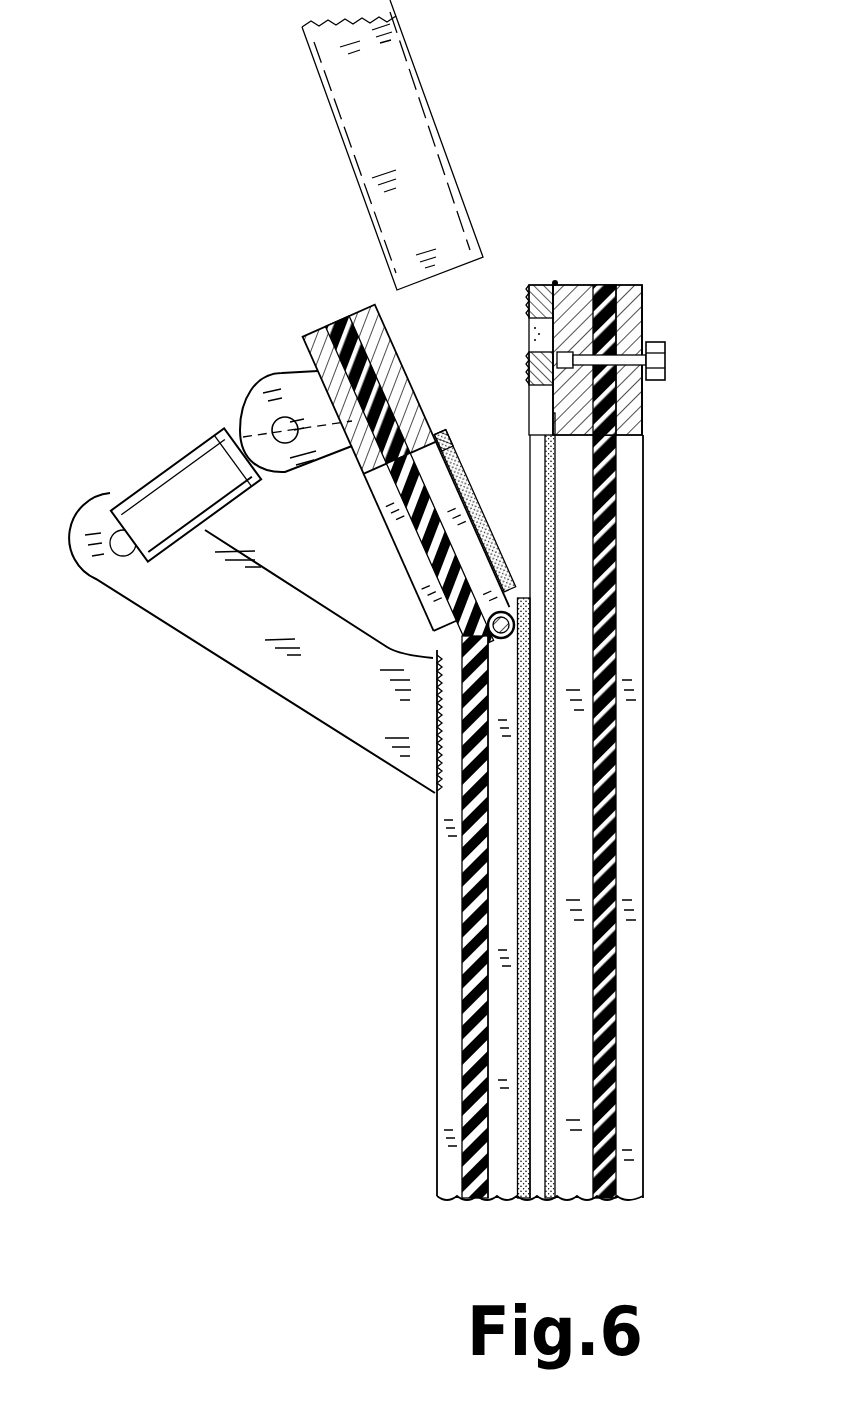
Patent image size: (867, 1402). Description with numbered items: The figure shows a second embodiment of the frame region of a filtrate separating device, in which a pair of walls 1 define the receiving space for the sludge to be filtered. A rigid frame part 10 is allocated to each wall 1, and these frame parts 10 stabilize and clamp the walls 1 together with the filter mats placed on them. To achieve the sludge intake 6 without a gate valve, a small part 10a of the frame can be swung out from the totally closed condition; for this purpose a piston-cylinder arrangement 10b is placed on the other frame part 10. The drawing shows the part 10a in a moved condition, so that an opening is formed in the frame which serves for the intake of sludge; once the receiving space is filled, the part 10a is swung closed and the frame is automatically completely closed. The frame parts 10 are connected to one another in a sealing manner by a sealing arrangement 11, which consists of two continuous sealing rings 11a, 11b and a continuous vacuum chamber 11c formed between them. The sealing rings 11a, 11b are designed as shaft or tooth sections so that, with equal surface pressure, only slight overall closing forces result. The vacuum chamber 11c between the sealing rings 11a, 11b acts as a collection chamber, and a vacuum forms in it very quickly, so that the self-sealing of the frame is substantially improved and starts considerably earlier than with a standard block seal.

The wall 1 is at (605, 770).
The sludge intake 6 is at (350, 268).
The rigid frame part 10 is at (586, 285).
The small part of frame 10a is at (395, 362).
The piston-cylinder arrangement 10b is at (174, 484).
The sealing arrangement 11 is at (637, 298).
The sealing ring 11a is at (556, 282).
The sealing ring 11b is at (553, 374).
The vacuum chamber 11c is at (640, 305).